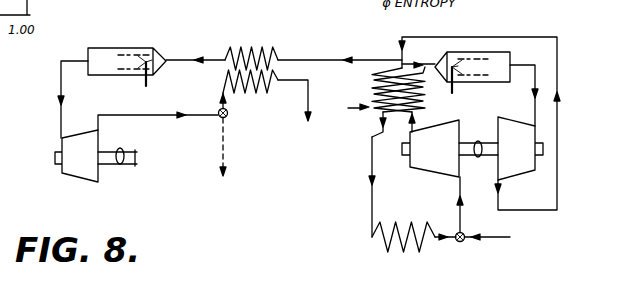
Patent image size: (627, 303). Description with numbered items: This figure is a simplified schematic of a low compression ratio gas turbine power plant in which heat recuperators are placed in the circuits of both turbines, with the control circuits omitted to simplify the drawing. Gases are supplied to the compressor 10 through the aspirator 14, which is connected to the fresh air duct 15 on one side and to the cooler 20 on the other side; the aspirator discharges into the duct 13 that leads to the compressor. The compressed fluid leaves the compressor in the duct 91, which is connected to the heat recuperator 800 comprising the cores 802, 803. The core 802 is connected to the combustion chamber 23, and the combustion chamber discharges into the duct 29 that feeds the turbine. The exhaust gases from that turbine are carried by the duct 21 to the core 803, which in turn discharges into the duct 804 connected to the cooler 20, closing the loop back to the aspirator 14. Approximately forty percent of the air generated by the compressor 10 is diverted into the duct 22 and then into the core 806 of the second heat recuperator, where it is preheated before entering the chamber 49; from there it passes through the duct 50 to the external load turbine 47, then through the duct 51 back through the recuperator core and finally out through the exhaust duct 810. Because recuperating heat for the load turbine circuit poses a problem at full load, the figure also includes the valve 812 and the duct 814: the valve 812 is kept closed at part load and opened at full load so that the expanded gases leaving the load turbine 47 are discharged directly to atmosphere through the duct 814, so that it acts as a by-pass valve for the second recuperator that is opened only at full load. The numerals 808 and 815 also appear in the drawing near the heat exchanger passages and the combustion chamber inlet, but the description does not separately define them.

The compressor 10 is at (418, 175).
The duct 13 is at (462, 214).
The aspirator 14 is at (458, 243).
The fresh air duct 15 is at (497, 240).
The cooler 20 is at (392, 250).
The duct 21 is at (477, 37).
The duct 22 is at (298, 58).
The combustion chamber 23 is at (482, 85).
The duct 29 is at (540, 77).
The external load turbine 47 is at (70, 180).
The chamber 49 is at (115, 48).
The duct 50 is at (58, 92).
The duct 51 is at (200, 122).
The duct 91 is at (432, 80).
The heat recuperator 800 is at (342, 107).
The core 802 is at (372, 136).
The core 803 is at (378, 73).
The duct 804 is at (370, 196).
The core 806 is at (262, 45).
The heat exchanger cold side inlet 808 is at (255, 91).
The exhaust duct 810 is at (305, 106).
The valve 812 is at (219, 111).
The duct 814 is at (225, 150).
The combustor inlet line 815 is at (409, 62).